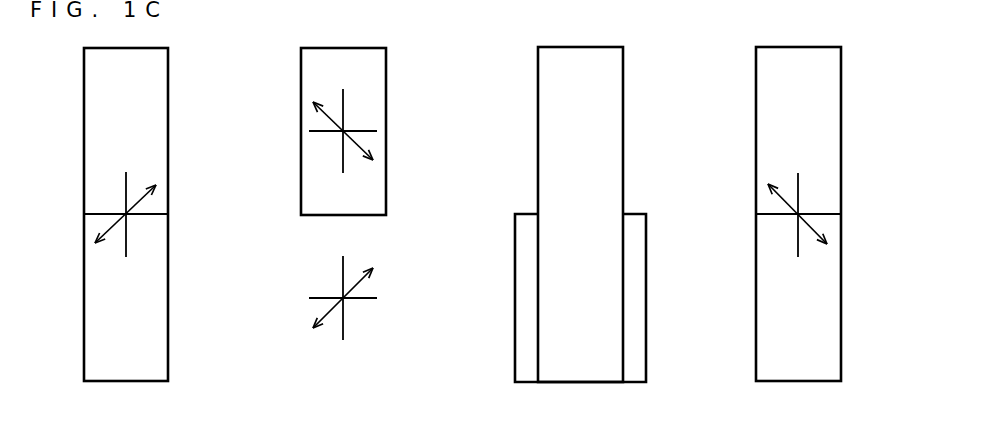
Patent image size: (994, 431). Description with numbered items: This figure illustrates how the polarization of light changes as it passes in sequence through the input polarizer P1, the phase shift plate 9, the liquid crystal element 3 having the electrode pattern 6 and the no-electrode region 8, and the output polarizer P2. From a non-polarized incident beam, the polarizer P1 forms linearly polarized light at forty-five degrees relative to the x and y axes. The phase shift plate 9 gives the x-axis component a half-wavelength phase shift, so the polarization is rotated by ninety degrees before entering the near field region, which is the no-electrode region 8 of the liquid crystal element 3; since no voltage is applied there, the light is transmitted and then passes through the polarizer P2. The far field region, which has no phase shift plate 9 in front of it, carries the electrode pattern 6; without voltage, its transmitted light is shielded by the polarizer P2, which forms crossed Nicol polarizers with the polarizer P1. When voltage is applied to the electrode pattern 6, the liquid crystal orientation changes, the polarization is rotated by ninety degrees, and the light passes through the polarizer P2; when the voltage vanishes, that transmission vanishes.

The input polarizer P1 is at (168, 78).
The output polarizer (analyzer) P2 is at (841, 78).
The phase shift plate 9 is at (386, 78).
The no-electrode region 8 is at (623, 78).
The electrode pattern 6 is at (646, 298).
The liquid crystal element 3 is at (571, 214).